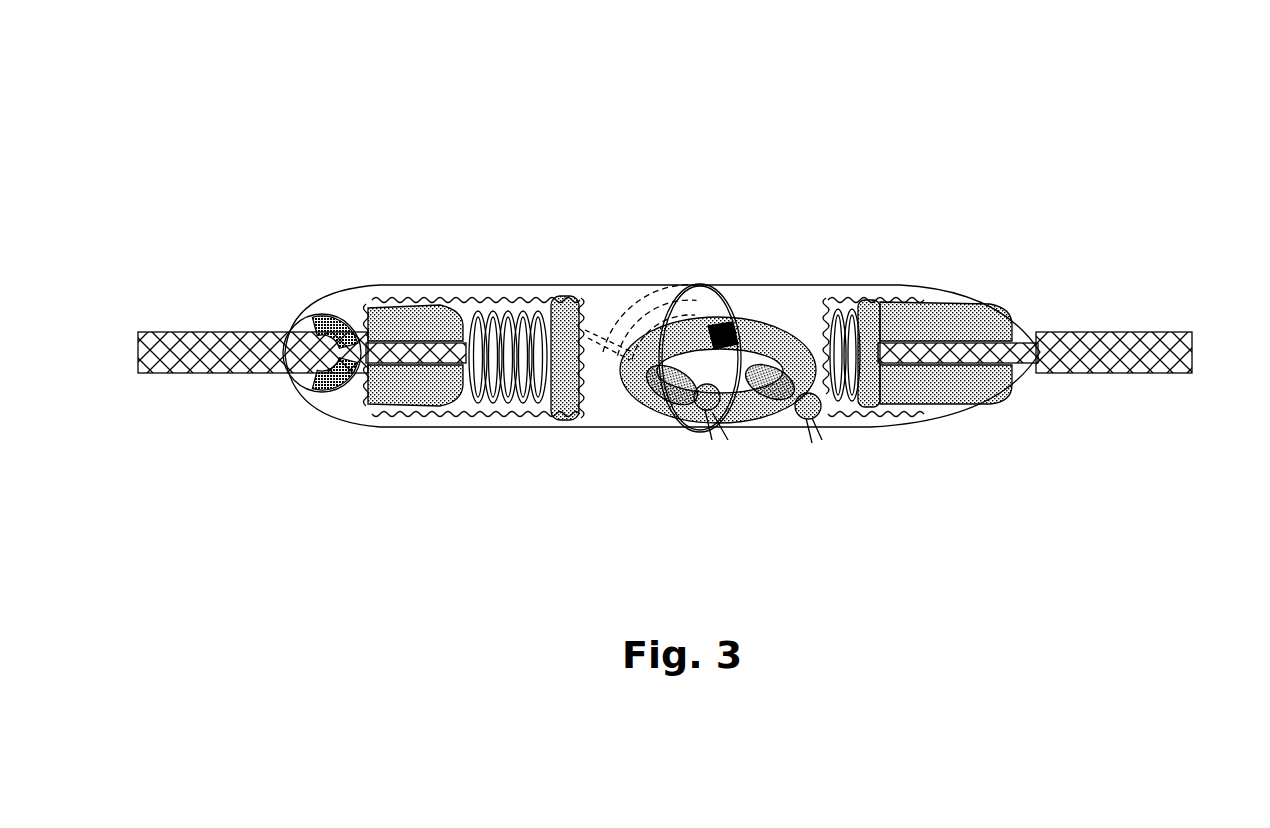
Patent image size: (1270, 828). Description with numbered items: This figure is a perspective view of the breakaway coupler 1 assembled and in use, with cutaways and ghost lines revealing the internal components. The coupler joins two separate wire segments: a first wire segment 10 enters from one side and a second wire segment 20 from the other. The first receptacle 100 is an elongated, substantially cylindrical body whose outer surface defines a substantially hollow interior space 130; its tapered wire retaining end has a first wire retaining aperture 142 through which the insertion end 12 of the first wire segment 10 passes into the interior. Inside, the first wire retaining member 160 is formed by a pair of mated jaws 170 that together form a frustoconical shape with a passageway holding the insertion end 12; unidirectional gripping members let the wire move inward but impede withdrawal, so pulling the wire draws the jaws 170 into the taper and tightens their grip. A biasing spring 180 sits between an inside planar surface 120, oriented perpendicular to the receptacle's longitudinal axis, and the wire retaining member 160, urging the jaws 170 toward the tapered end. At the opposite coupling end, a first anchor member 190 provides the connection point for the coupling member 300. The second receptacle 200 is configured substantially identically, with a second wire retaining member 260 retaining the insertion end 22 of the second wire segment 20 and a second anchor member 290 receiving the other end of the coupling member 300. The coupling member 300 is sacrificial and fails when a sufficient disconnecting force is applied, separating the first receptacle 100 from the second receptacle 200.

The breakaway coupler 1 is at (660, 258).
The first wire segment 10 is at (166, 330).
The insertion end of the first wire segment 12 is at (413, 342).
The second wire segment 20 is at (1134, 330).
The insertion end of the second wire segment 22 is at (929, 340).
The first receptacle 100 is at (520, 280).
The inside planar surface 120 is at (558, 422).
The substantially hollow interior space 130 is at (470, 406).
The first wire retaining aperture 142 is at (288, 388).
The first wire retaining member 160 is at (293, 312).
The mated jaws 170 is at (385, 305).
The biasing spring 180 is at (511, 406).
The first anchor member 190 is at (657, 428).
The second receptacle 200 is at (754, 280).
The second wire retaining member 260 is at (996, 318).
The second anchor member 290 is at (820, 418).
The coupling member 300 is at (736, 424).